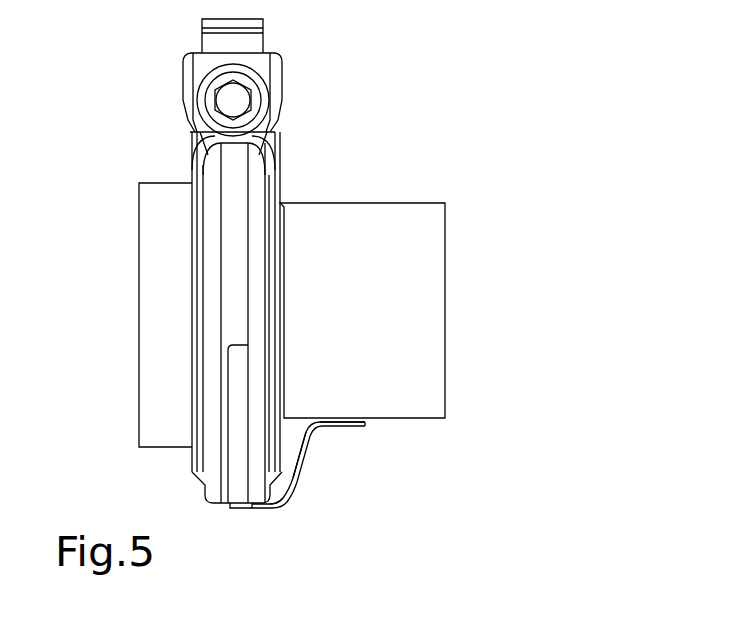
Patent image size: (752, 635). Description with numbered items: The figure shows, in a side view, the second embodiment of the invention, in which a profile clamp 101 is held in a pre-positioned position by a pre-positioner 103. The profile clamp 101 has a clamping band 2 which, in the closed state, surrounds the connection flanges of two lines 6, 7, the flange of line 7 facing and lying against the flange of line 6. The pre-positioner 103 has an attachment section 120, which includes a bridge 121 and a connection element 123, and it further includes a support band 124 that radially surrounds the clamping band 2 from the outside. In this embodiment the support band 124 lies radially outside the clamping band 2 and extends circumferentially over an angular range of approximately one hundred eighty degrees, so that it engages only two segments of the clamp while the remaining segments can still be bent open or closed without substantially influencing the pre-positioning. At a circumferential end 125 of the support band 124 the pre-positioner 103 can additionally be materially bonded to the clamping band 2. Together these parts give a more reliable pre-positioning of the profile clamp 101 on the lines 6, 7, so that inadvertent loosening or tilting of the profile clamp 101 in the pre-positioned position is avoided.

The profile clamp 101 is at (115, 125).
The clamping band 2 is at (237, 193).
The line 6 is at (377, 220).
The line 7 is at (150, 222).
The circumferential end 125 is at (243, 350).
The support band 124 is at (247, 488).
The attachment section 120 is at (365, 432).
The connection element 123 is at (342, 427).
The bridge 121 is at (305, 475).
The pre-positioner 103 is at (307, 523).